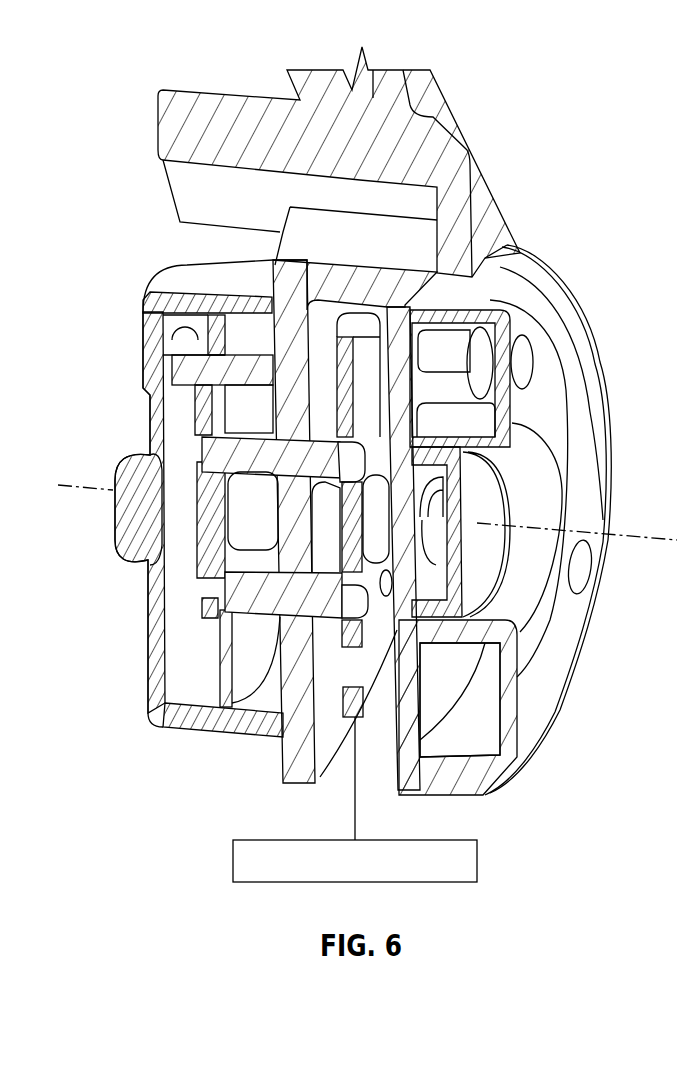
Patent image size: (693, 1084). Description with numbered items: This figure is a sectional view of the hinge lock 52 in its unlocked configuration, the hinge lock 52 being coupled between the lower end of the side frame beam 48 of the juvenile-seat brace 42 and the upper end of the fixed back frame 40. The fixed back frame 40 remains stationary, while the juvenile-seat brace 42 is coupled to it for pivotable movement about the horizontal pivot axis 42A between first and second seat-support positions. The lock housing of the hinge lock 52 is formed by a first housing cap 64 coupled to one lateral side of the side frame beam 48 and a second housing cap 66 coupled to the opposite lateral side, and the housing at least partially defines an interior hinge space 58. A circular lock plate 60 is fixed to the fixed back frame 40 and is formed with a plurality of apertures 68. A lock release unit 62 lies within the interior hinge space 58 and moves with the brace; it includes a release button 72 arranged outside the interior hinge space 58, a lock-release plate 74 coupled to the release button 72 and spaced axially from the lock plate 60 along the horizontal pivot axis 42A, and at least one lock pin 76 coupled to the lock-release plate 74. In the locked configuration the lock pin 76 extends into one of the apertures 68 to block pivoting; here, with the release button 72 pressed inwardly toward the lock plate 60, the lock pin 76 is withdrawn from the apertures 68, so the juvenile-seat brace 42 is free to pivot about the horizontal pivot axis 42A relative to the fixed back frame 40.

The fixed back frame 40 is at (290, 840).
The juvenile-seat brace 42 is at (572, 742).
The horizontal pivot axis 42A is at (640, 533).
The side frame beam 48 is at (428, 100).
The hinge lock 52 is at (552, 236).
The interior hinge space 58 is at (205, 700).
The lock plate 60 is at (383, 728).
The lock release unit 62 is at (237, 590).
The first housing cap 64 is at (567, 632).
The second housing cap 66 is at (126, 570).
The apertures 68 is at (347, 648).
The release button 72 is at (487, 490).
The lock-release plate 74 is at (131, 456).
The lock pin 76 is at (183, 642).